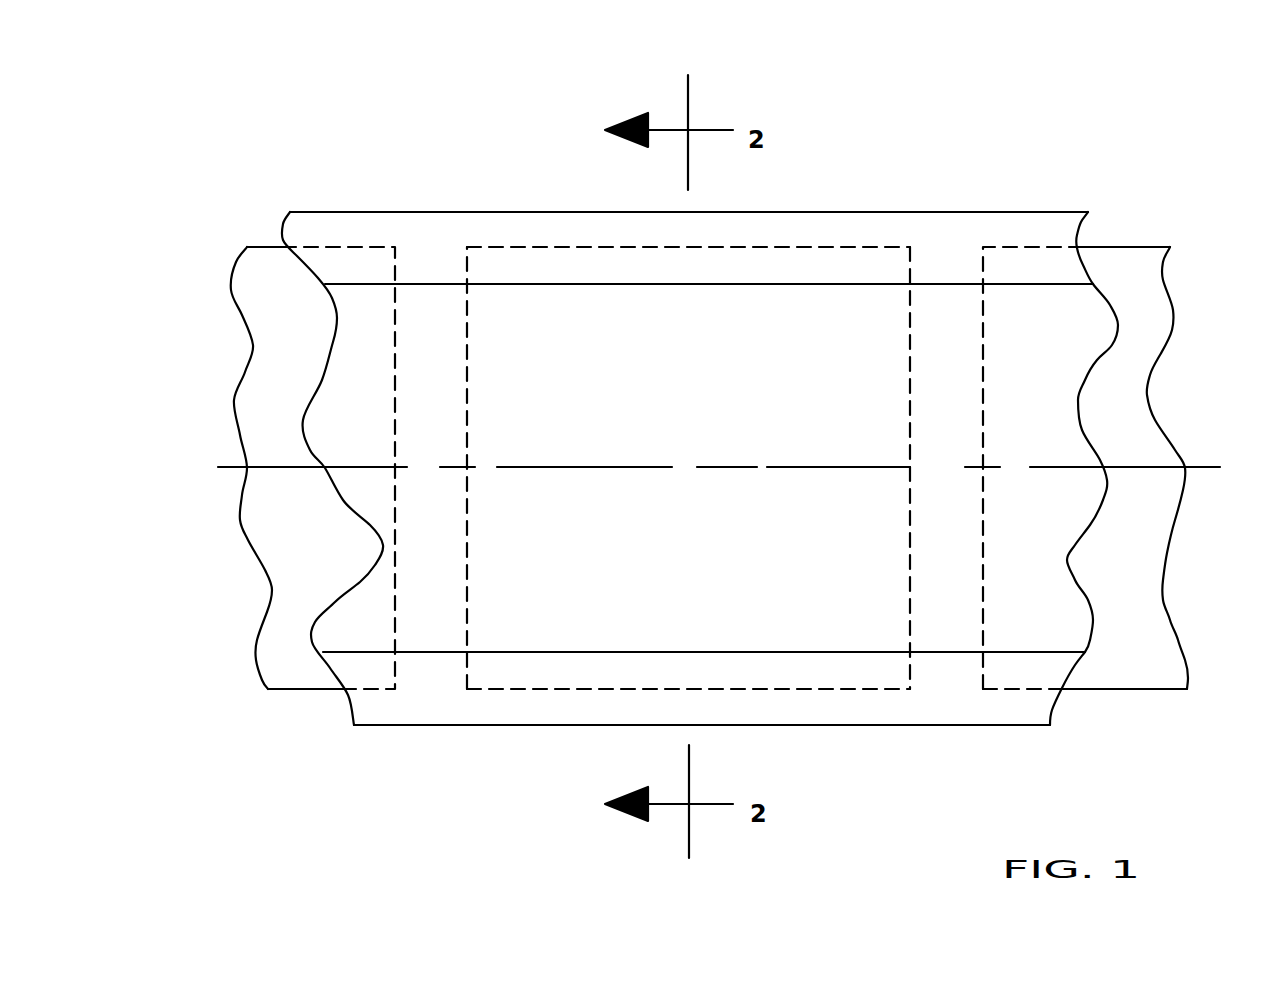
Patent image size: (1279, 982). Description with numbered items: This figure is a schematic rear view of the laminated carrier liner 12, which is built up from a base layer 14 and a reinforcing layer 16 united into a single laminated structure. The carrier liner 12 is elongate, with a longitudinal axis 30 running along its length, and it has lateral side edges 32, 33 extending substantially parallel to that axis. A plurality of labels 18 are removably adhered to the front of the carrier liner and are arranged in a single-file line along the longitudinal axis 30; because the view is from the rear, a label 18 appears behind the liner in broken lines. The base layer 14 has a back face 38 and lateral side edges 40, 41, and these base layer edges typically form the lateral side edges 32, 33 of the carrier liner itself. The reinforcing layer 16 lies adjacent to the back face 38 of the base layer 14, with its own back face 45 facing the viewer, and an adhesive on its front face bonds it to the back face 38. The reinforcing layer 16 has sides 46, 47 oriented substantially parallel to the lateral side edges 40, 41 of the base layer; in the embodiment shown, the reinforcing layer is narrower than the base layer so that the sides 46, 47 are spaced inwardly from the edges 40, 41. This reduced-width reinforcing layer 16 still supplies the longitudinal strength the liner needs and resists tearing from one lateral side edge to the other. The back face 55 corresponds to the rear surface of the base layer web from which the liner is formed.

The laminated carrier liner 12 is at (972, 154).
The base layer 14 is at (943, 235).
The reinforcing layer 16 is at (810, 303).
The labels 18 is at (857, 247).
The longitudinal axis 30 is at (277, 468).
The lateral side edge 32 is at (323, 212).
The lateral side edge 33 is at (384, 726).
The back face 38 is at (443, 247).
The lateral side edge 40 is at (392, 212).
The lateral side edge 41 is at (458, 726).
The back face 45 is at (527, 632).
The side 46 is at (525, 285).
The side 47 is at (567, 652).
The back face 55 is at (1040, 232).